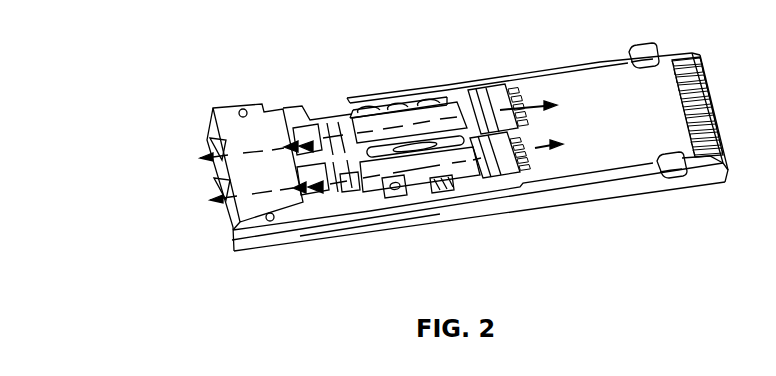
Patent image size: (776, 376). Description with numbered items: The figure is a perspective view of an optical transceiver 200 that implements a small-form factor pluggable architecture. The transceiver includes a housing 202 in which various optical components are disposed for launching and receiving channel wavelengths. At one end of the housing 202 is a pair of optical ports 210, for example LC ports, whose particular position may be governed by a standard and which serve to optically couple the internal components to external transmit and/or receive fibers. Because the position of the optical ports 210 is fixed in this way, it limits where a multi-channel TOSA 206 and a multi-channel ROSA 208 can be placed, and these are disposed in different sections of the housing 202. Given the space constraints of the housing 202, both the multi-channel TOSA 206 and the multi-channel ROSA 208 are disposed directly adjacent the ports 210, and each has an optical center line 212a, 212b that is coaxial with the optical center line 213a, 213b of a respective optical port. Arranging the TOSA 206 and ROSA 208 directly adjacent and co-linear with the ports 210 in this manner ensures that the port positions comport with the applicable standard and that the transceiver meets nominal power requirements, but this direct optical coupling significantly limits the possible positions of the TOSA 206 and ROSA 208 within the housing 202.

The optical transceiver 200 is at (268, 49).
The housing 202 is at (538, 88).
The multi-channel TOSA 206 is at (397, 180).
The multi-channel ROSA 208 is at (410, 118).
The optical ports 210 is at (184, 170).
The optical center line 212a is at (554, 154).
The optical center line 212b is at (476, 87).
The optical center line 213a is at (267, 224).
The optical center line 213b is at (285, 128).